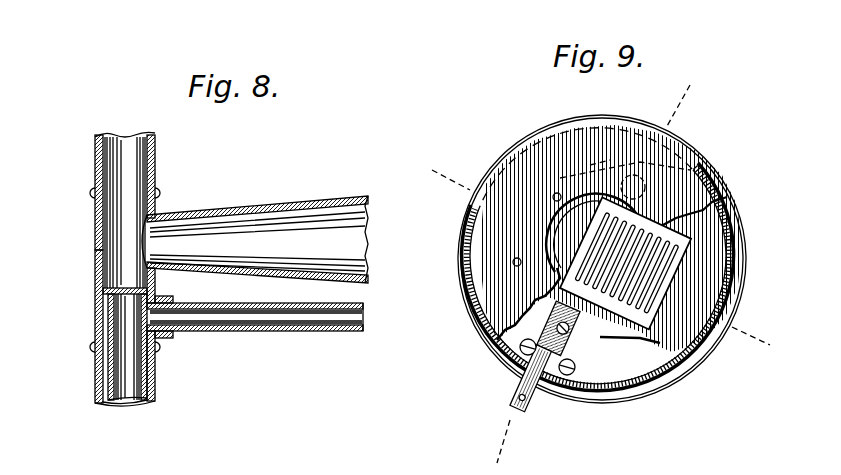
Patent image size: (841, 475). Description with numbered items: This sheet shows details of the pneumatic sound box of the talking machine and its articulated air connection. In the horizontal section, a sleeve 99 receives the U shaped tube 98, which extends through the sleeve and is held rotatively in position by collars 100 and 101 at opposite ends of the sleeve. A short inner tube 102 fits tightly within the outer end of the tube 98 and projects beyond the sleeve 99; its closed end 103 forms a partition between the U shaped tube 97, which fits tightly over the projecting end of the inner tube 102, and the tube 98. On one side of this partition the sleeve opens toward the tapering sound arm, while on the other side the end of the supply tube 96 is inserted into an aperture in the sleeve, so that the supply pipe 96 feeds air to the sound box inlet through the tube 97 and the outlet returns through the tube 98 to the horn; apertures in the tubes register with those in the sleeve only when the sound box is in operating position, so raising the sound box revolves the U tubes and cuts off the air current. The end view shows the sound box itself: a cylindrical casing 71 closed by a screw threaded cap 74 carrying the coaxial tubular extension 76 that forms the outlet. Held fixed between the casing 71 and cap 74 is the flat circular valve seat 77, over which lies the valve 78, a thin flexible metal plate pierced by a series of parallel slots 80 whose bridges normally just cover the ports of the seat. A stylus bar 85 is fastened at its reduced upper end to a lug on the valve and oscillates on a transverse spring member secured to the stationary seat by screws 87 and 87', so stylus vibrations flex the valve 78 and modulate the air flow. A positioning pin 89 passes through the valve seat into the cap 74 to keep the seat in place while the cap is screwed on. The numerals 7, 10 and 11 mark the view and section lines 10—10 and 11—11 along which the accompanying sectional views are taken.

In FIG. 8, the supply tube 96 is at (272, 333).
In FIG. 8, the U shaped tube 97 is at (100, 400).
In FIG. 8, the U shaped tube 98 is at (98, 158).
In FIG. 8, the sleeve 99 is at (95, 275).
In FIG. 8, the collar 100 is at (92, 198).
In FIG. 8, the collar 101 is at (93, 347).
In FIG. 8, the inner tube 102 is at (140, 372).
In FIG. 8, the closed end 103 is at (147, 290).
In FIG. 9, the casing rim 7 is at (554, 121).
In FIG. 9, the section line 10— 10 is at (699, 99).
In FIG. 9, the section line 11— 11 is at (440, 162).
In FIG. 9, the cylindrical casing 71 is at (690, 357).
In FIG. 9, the cap 74 is at (527, 168).
In FIG. 9, the tubular extension 76 is at (553, 212).
In FIG. 9, the valve seat 77 is at (633, 393).
In FIG. 9, the valve 78 is at (607, 325).
In FIG. 9, the slots 80 is at (643, 282).
In FIG. 9, the stylus bar 85 is at (530, 386).
In FIG. 9, the screw 87 is at (494, 364).
In FIG. 9, the screw 87' is at (578, 394).
In FIG. 9, the positioning pin 89 is at (680, 143).